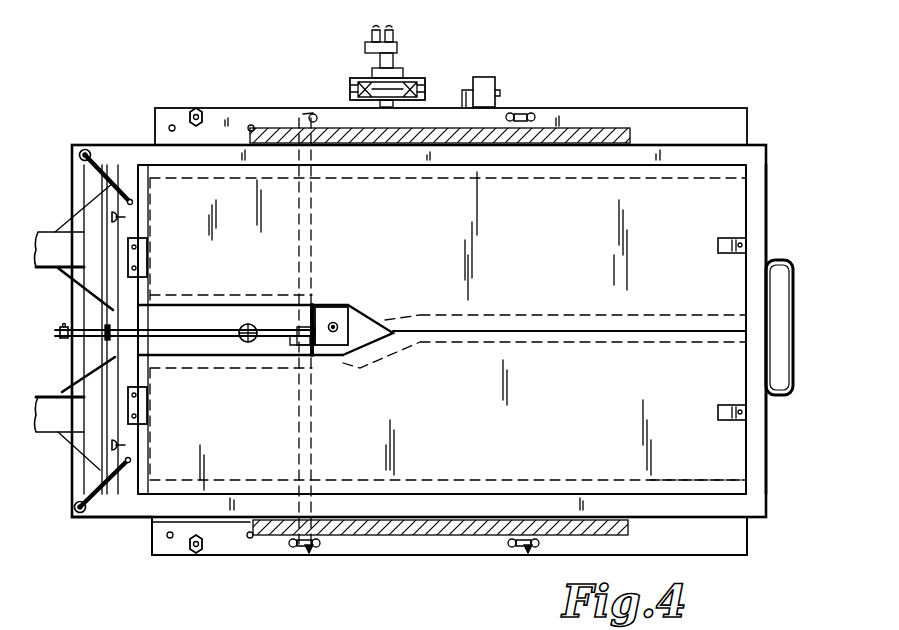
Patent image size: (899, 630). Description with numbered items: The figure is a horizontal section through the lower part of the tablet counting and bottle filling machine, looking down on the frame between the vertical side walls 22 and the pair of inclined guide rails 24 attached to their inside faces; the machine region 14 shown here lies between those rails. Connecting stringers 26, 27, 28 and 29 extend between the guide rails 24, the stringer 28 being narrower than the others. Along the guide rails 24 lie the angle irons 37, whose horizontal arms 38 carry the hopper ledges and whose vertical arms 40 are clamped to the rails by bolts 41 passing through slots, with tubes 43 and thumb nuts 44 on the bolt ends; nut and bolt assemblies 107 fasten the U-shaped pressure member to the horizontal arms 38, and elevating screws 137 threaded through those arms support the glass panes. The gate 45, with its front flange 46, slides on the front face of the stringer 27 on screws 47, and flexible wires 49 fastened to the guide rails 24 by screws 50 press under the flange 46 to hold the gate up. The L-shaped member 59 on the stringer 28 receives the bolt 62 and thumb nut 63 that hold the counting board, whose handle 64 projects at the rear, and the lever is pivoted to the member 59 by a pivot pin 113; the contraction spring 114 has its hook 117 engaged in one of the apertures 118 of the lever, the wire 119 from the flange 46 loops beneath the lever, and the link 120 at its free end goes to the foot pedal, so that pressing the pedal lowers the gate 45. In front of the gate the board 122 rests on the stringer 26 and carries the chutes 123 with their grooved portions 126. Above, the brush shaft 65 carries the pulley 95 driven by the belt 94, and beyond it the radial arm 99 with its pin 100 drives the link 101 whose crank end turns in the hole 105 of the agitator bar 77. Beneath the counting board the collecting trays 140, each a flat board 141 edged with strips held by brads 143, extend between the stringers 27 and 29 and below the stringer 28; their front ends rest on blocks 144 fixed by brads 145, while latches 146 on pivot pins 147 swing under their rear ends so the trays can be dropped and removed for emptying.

The work table 14 is at (650, 185).
The side wall 22 is at (418, 527).
The guide rail 24 is at (767, 148).
The connecting stringer 26 is at (88, 192).
The connecting stringer 27 is at (135, 191).
The connecting stringer 28 is at (318, 230).
The connecting stringer 29 is at (767, 207).
The angle iron 37 is at (172, 556).
The horizontal arm 38 is at (620, 108).
The vertical arm 40 is at (152, 523).
The bolt 41 is at (308, 552).
The tube 43 is at (322, 541).
The thumb nut 44 is at (318, 548).
The gate 45 is at (118, 480).
The front flange 46 is at (107, 492).
The screw 47 is at (126, 218).
The flexible wire 49 is at (88, 182).
The screw 50 is at (87, 148).
The L-shaped member 59 is at (340, 302).
The bolt 62 is at (333, 343).
The thumb nut 63 is at (350, 312).
The handle 64 is at (785, 288).
The shaft 65 is at (395, 58).
The bar 77 is at (484, 78).
The belt 94 is at (425, 88).
The pulley 95 is at (352, 80).
The radially extending arm 99 is at (365, 47).
The pin 100 is at (386, 28).
The link 101 is at (372, 34).
The hole 105 is at (496, 86).
The nut and bolt assembly 107 is at (200, 113).
The pivot pin 113 is at (316, 325).
The contraction spring 114 is at (262, 340).
The hook 117 is at (250, 324).
The aperture 118 is at (236, 338).
The wire 119 is at (120, 330).
The link 120 is at (62, 340).
The board 122 is at (76, 300).
The chute 123 is at (62, 276).
The grooved portion 126 is at (50, 232).
The elevating screw 137 is at (172, 125).
The collecting tray 140 is at (668, 484).
The flat board 141 is at (748, 190).
The brad 143 is at (690, 168).
The block 144 is at (150, 272).
The brad 145 is at (137, 266).
The latch 146 is at (730, 238).
The pivot pin 147 is at (743, 254).